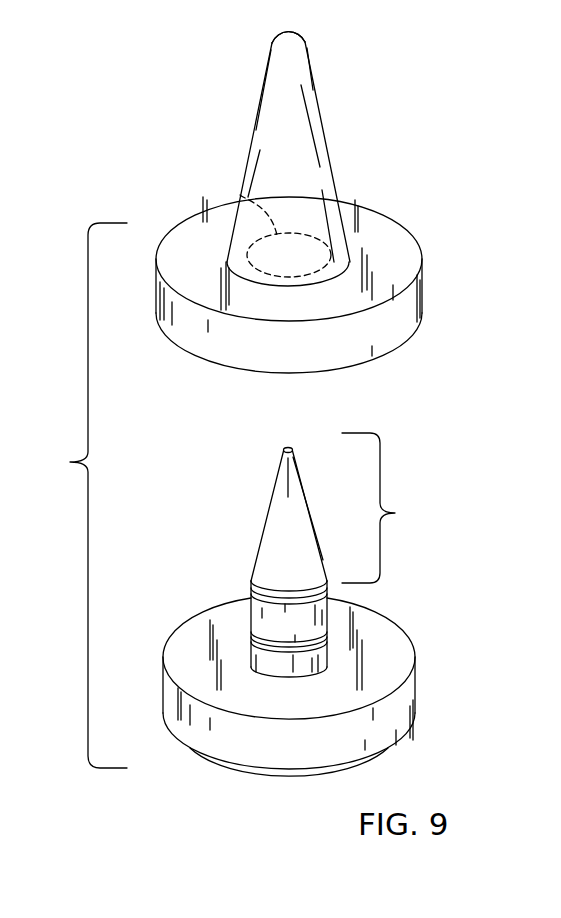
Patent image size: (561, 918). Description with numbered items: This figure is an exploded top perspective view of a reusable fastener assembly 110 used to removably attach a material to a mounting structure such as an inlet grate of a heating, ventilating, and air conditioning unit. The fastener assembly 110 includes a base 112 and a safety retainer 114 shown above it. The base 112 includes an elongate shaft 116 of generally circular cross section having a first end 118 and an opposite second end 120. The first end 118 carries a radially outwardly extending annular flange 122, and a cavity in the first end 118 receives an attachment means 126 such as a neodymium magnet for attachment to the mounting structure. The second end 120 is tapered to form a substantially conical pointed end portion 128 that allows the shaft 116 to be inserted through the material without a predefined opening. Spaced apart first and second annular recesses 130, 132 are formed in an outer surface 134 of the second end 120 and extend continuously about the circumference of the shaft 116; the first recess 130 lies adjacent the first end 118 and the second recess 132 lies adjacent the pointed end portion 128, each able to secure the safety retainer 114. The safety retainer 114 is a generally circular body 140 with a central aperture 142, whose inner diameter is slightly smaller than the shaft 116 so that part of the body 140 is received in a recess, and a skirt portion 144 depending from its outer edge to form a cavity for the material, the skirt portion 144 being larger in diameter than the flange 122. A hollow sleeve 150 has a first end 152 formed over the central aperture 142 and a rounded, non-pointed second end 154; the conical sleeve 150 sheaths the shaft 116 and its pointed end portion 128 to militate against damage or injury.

The fastener assembly 110 is at (81, 495).
The base 112 is at (263, 503).
The safety retainer 114 is at (176, 210).
The elongate shaft 116 is at (250, 592).
The first end 118 is at (257, 658).
The second end 120 is at (287, 448).
The annular flange 122 is at (161, 689).
The attachment means 126 is at (288, 777).
The pointed end portion 128 is at (388, 508).
The first annular recess 130 is at (250, 637).
The second annular recess 132 is at (334, 598).
The outer surface 134 is at (250, 613).
The body 140 is at (204, 207).
The central aperture 142 is at (240, 195).
The skirt portion 144 is at (423, 287).
The hollow sleeve 150 is at (334, 174).
The first end 152 is at (336, 257).
The second end 154 is at (308, 48).